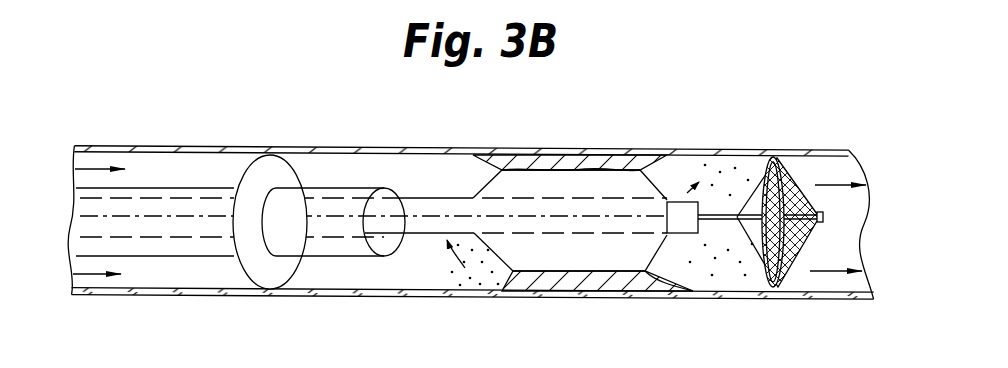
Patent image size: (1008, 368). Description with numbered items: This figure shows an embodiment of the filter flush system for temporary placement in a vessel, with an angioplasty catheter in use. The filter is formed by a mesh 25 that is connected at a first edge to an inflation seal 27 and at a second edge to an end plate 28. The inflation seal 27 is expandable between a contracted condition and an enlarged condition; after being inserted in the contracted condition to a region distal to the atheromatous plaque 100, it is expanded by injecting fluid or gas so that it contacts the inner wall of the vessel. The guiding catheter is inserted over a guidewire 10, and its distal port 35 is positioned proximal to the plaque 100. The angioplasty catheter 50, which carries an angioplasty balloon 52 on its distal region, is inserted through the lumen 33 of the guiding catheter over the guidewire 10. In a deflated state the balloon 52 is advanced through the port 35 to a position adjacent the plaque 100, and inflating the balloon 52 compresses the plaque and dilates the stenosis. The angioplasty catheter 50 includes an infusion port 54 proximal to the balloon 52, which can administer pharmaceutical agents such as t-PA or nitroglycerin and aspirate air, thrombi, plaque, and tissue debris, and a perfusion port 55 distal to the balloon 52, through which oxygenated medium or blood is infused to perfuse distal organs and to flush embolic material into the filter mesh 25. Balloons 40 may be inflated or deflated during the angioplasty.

The guidewire 10 is at (152, 206).
The lumen 33 is at (218, 243).
The angioplasty catheter 50 is at (215, 200).
The balloons 40 is at (275, 177).
The distal port 35 is at (388, 244).
The angioplasty balloon 52 is at (543, 185).
The infusion port 54 is at (455, 233).
The perfusion port 55 is at (681, 202).
The atheromatous plaque 100 is at (668, 291).
The mesh 25 is at (800, 258).
The inflation seal 27 is at (773, 157).
The end plate 28 is at (824, 219).